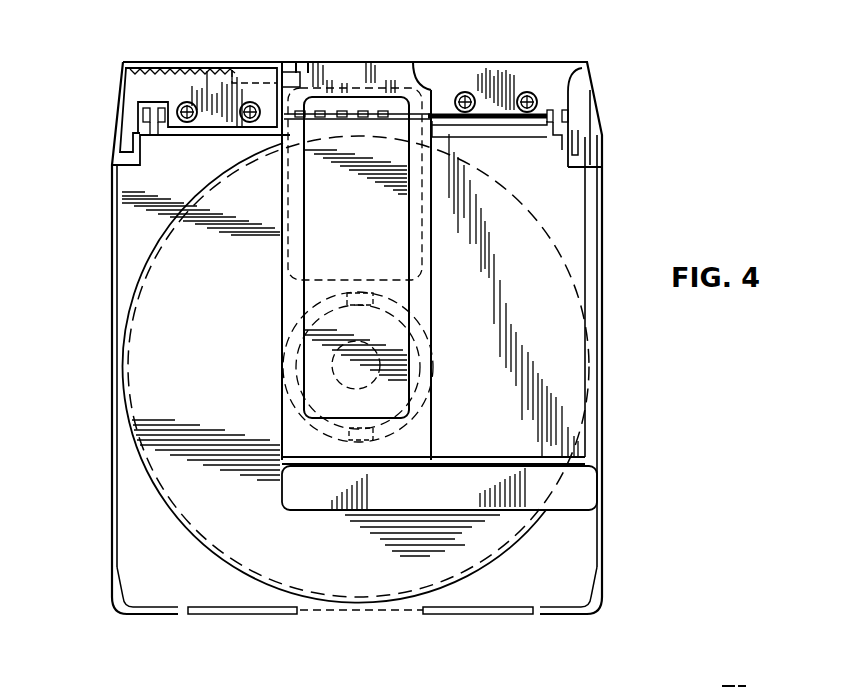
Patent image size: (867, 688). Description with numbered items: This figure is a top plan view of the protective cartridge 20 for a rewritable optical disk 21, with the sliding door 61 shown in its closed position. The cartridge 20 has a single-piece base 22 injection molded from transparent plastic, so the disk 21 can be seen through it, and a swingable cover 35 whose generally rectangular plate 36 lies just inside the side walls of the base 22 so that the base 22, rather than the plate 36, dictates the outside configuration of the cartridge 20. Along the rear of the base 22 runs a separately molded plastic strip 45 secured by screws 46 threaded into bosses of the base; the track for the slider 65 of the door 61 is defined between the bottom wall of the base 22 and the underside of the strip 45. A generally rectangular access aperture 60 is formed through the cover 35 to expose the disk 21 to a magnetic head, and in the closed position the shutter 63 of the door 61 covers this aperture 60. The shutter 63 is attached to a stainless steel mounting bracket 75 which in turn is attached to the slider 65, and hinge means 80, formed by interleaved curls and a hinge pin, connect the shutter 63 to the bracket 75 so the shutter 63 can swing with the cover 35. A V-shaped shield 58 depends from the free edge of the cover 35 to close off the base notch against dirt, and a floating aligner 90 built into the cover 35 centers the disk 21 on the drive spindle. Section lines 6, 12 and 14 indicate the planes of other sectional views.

The section line 6- 6 is at (110, 592).
The section line 12- 12 is at (113, 73).
The section line 14- 14 is at (357, 10).
The protective cartridge 20 is at (650, 426).
The rewritable optical disk 21 is at (536, 184).
The base 22 is at (612, 366).
The cover 35 is at (176, 587).
The plate 36 is at (548, 572).
The plastic strip 45 is at (443, 80).
The screws 46 is at (243, 108).
The shield 58 is at (330, 615).
The access aperture 60 is at (283, 257).
The slidable door 61 is at (299, 45).
The shutter 63 is at (390, 260).
The slider 65 is at (260, 80).
The mounting bracket 75 is at (386, 74).
The hinge means 80 is at (348, 132).
The floating aligner 90 is at (381, 330).